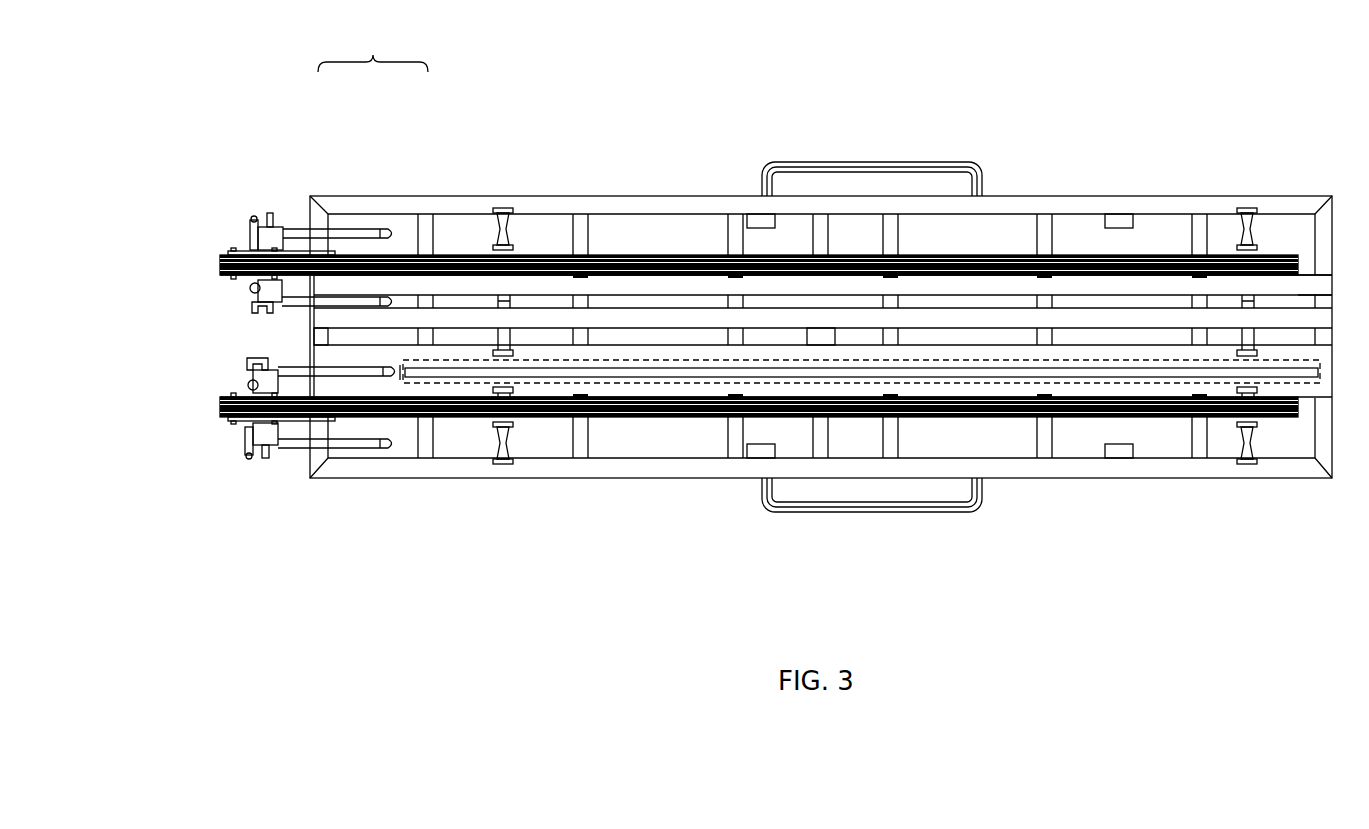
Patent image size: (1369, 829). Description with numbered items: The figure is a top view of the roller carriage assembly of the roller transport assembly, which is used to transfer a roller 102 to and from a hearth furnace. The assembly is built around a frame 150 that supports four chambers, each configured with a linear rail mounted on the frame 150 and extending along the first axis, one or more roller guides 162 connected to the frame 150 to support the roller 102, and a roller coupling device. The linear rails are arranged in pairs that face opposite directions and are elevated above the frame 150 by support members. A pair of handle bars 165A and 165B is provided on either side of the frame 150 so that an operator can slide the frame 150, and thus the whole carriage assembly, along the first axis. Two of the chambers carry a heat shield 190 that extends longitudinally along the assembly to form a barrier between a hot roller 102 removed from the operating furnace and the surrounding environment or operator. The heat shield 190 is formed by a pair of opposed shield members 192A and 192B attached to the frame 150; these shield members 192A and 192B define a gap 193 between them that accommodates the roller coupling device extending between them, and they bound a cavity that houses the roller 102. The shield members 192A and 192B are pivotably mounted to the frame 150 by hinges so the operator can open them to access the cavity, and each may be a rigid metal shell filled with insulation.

The frame 150 is at (668, 197).
The roller 102 is at (702, 383).
The heat shield 190 is at (373, 51).
The shield member 192A is at (410, 315).
The shield member 192B is at (447, 283).
The gap 193 is at (1025, 297).
The roller guide 162 is at (495, 233).
The handle bar 165A is at (870, 513).
The handle bar 165B is at (840, 162).